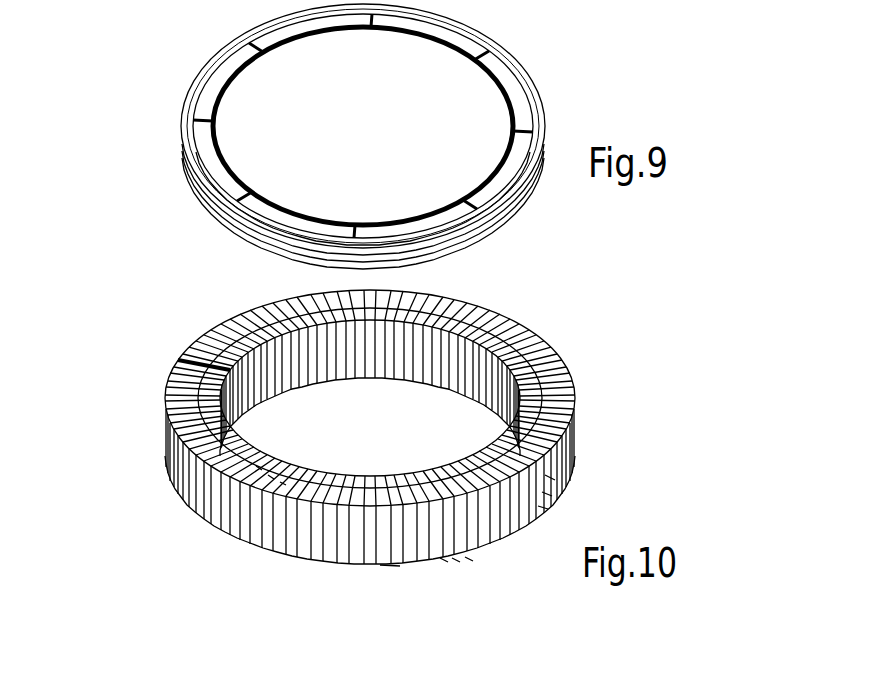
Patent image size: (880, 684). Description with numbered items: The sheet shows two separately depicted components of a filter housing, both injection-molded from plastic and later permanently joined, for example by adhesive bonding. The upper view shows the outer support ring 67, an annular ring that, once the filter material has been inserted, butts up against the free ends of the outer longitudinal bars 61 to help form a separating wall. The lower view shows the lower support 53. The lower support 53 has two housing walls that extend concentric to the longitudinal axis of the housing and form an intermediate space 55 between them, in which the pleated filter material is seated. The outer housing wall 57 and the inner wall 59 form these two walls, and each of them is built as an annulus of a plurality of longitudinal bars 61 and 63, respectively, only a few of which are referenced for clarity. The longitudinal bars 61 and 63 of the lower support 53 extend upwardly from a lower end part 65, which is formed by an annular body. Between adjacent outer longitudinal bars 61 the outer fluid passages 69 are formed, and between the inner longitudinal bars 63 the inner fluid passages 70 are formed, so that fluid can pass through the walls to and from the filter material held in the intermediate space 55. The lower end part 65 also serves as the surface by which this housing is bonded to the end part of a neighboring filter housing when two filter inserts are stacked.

In FIG. 9, the outer support ring 67 is at (540, 70).
In FIG. 10, the lower support 53 is at (410, 424).
In FIG. 10, the intermediate space 55 is at (173, 372).
In FIG. 10, the outer housing wall 57 is at (183, 500).
In FIG. 10, the inner wall 59 is at (500, 313).
In FIG. 10, the longitudinal bars 61 is at (543, 507).
In FIG. 10, the longitudinal bars 63 is at (293, 483).
In FIG. 10, the lower end part 65 is at (397, 568).
In FIG. 10, the outer fluid passages 69 is at (468, 560).
In FIG. 10, the inner fluid passages 70 is at (372, 374).